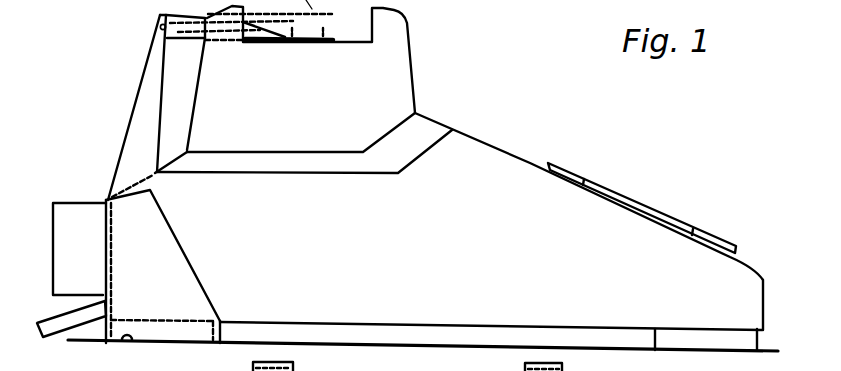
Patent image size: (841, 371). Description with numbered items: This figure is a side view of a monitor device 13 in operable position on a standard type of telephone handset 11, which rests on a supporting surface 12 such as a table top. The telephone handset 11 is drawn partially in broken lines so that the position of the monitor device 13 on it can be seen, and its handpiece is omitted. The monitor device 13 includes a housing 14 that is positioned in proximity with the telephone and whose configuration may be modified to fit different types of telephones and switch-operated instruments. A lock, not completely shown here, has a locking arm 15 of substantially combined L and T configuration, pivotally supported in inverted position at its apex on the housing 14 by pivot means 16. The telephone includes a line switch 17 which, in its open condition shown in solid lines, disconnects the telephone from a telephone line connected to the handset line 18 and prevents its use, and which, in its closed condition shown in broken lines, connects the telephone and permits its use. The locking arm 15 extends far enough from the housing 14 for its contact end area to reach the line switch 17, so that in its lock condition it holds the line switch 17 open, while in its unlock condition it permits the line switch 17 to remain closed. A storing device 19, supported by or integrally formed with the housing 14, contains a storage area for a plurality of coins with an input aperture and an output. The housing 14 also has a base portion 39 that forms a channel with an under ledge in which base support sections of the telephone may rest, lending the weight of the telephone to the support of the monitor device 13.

The telephone handset 11 is at (422, 250).
The supporting surface 12 is at (713, 353).
The monitor device 13 is at (158, 282).
The housing 14 is at (150, 143).
The locking arm 15 is at (336, 39).
The pivot means 16 is at (160, 27).
The line switch 17 is at (334, 15).
The handset line 18 is at (53, 323).
The storing device 19 is at (85, 255).
The base portion 39 is at (118, 341).